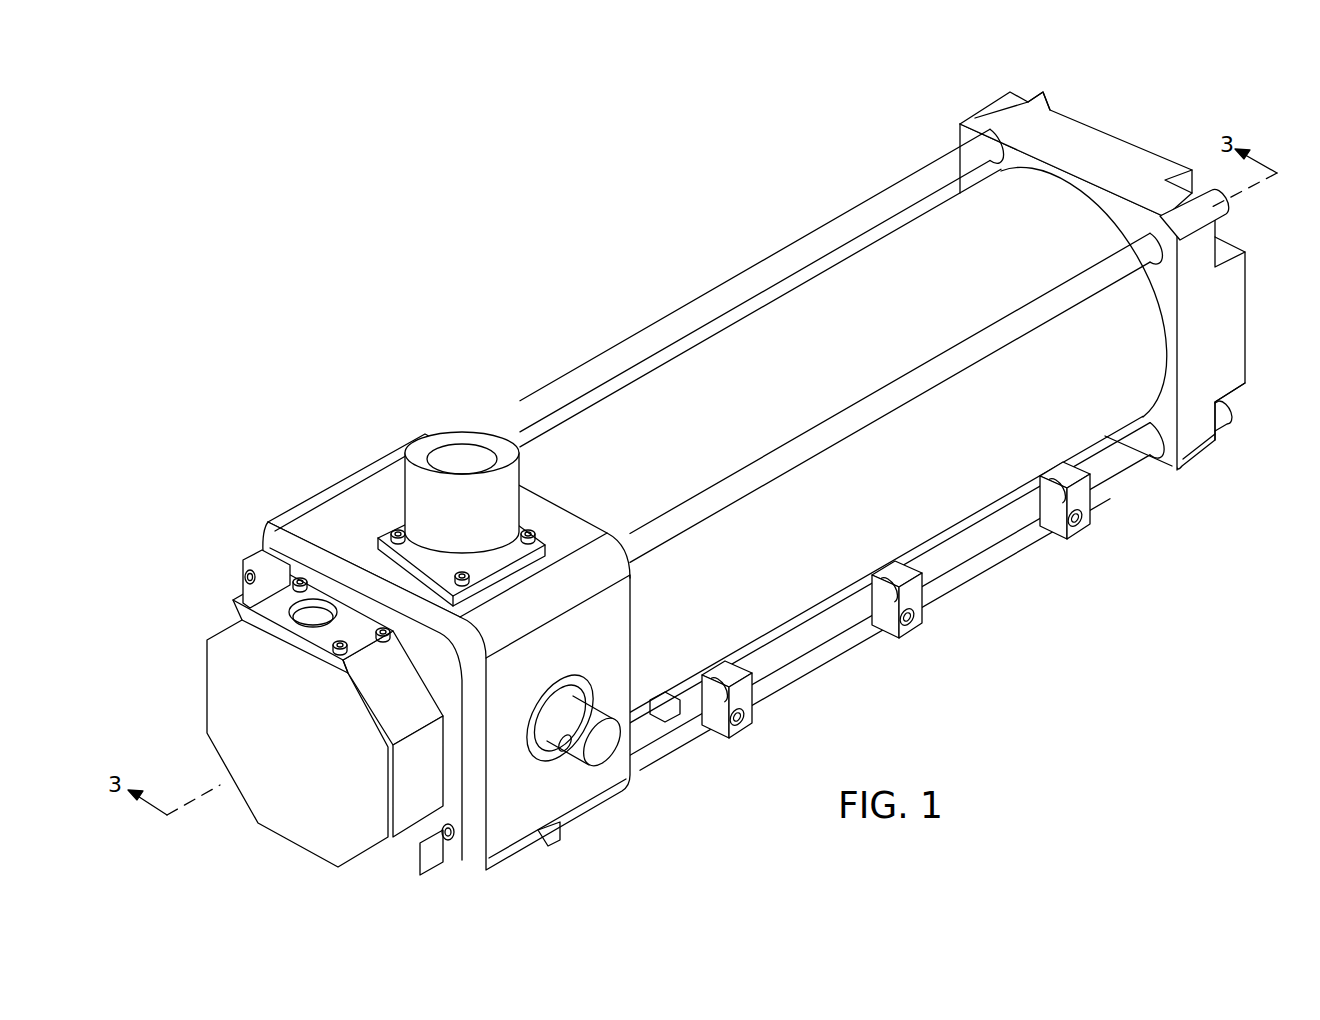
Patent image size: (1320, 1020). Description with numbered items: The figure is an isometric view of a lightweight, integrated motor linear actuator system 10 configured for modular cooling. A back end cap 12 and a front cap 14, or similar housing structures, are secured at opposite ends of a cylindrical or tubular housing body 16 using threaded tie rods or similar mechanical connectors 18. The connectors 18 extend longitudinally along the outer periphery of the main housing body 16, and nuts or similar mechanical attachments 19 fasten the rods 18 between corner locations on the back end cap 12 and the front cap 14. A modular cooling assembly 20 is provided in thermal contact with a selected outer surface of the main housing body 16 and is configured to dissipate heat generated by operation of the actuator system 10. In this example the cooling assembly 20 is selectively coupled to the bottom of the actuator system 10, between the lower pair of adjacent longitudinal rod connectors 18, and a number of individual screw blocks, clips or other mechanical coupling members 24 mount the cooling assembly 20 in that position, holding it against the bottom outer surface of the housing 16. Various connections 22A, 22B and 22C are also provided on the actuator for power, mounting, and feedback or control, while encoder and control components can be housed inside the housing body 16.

The integrated motor linear actuator system 10 is at (386, 244).
The back end cap 12 is at (380, 463).
The front cap 14 is at (1118, 140).
The tubular housing body 16 is at (843, 293).
The tie rods 18 is at (630, 357).
The nuts 19 is at (1050, 100).
The modular cooling assembly 20 is at (833, 683).
The connection 22A is at (457, 455).
The connection 22B is at (597, 745).
The connection 22C is at (290, 530).
The mechanical coupling members 24 is at (1078, 530).